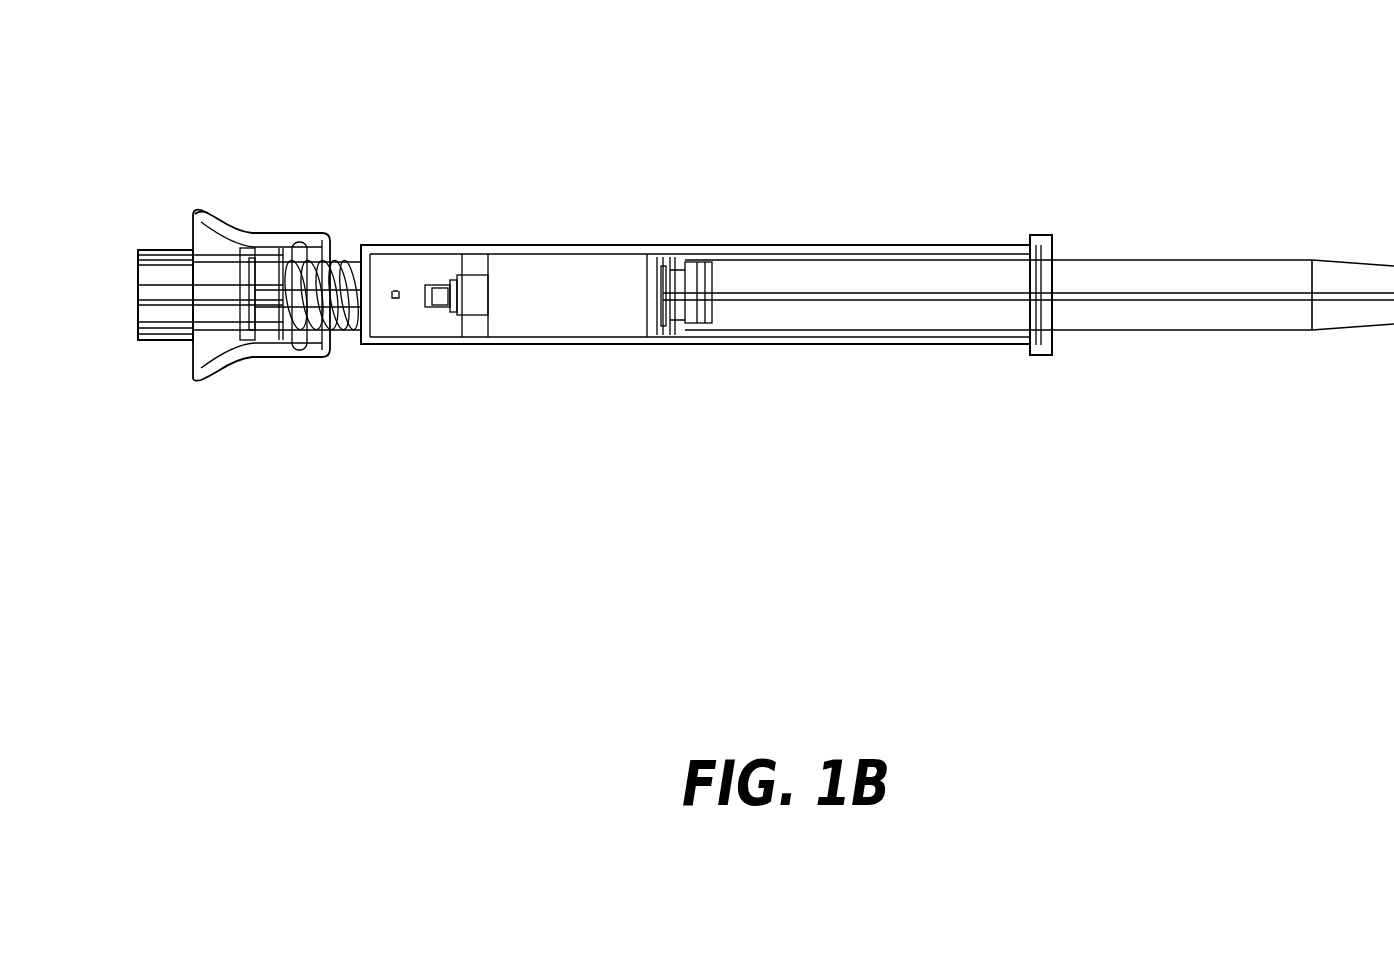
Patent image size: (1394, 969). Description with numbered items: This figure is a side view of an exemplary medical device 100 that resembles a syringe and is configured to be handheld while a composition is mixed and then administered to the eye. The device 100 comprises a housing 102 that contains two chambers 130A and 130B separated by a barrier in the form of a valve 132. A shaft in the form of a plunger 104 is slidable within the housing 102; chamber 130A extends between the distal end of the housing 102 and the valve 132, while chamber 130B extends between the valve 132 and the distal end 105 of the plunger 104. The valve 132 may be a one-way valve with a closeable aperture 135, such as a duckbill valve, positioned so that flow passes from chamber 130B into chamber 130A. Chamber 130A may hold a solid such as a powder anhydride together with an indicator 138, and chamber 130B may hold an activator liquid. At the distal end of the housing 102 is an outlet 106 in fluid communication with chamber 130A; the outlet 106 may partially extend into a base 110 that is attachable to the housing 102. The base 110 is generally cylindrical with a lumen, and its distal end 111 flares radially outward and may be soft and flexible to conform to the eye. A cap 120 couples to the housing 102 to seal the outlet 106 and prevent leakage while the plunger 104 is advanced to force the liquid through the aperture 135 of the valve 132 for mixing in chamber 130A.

The medical device 100 is at (517, 40).
The housing 102 is at (892, 345).
The plunger 104 is at (1193, 330).
The distal end of the plunger 105 is at (666, 296).
The outlet 106 is at (362, 297).
The base 110 is at (245, 230).
The distal end of the base 111 is at (193, 230).
The cap 120 is at (160, 340).
The first chamber 130A is at (394, 316).
The second chamber 130B is at (590, 296).
The valve 132 is at (485, 340).
The aperture 135 is at (438, 283).
The indicator 138 is at (397, 291).